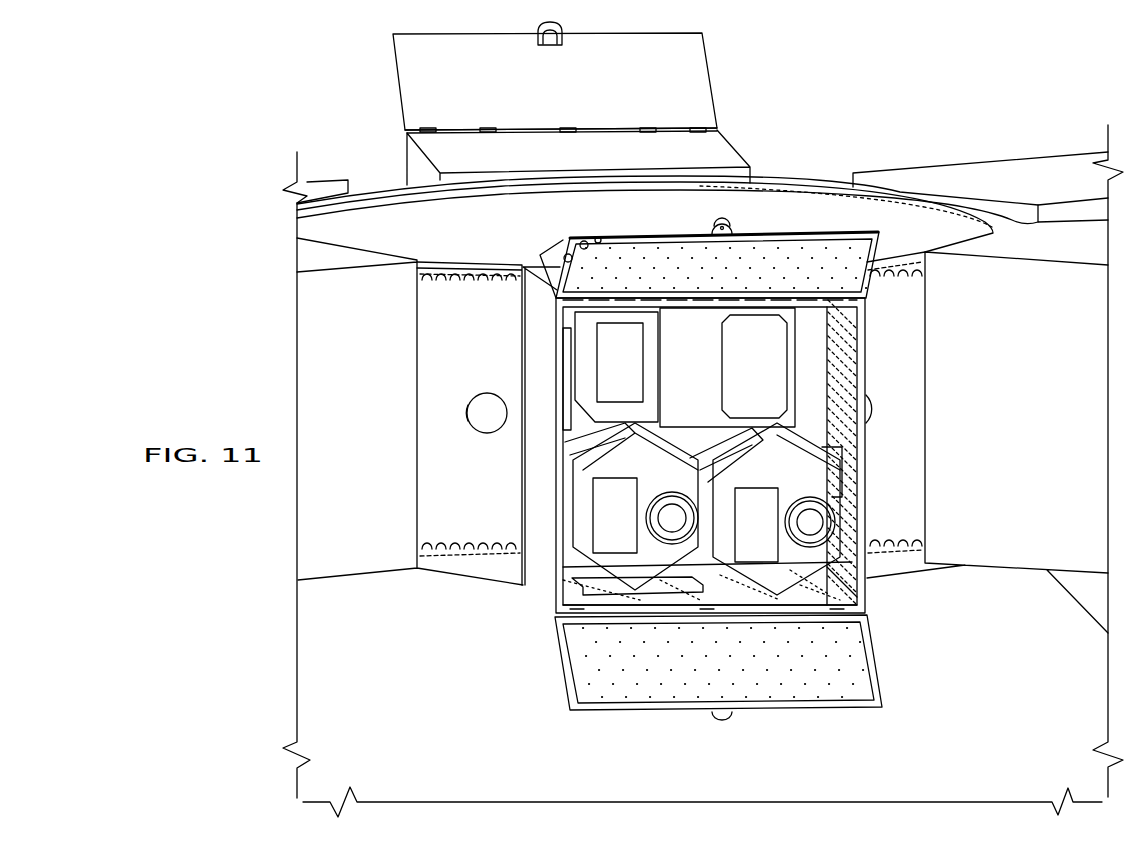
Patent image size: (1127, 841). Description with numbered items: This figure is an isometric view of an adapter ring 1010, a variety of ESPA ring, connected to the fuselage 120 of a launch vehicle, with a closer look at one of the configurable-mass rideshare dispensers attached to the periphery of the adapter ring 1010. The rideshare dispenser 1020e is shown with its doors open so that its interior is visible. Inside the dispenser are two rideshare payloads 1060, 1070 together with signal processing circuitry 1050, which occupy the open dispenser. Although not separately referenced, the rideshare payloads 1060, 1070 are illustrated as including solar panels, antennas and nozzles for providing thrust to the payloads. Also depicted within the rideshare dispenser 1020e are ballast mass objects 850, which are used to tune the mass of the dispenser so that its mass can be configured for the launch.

The fuselage 120 is at (998, 706).
The adapter ring 1010 is at (494, 323).
The rideshare dispenser 1020e is at (528, 477).
The ballast mass objects 850 is at (566, 358).
The signal processing circuitry 1050 is at (716, 380).
The rideshare payload 1060 is at (585, 508).
The rideshare payload 1070 is at (833, 497).